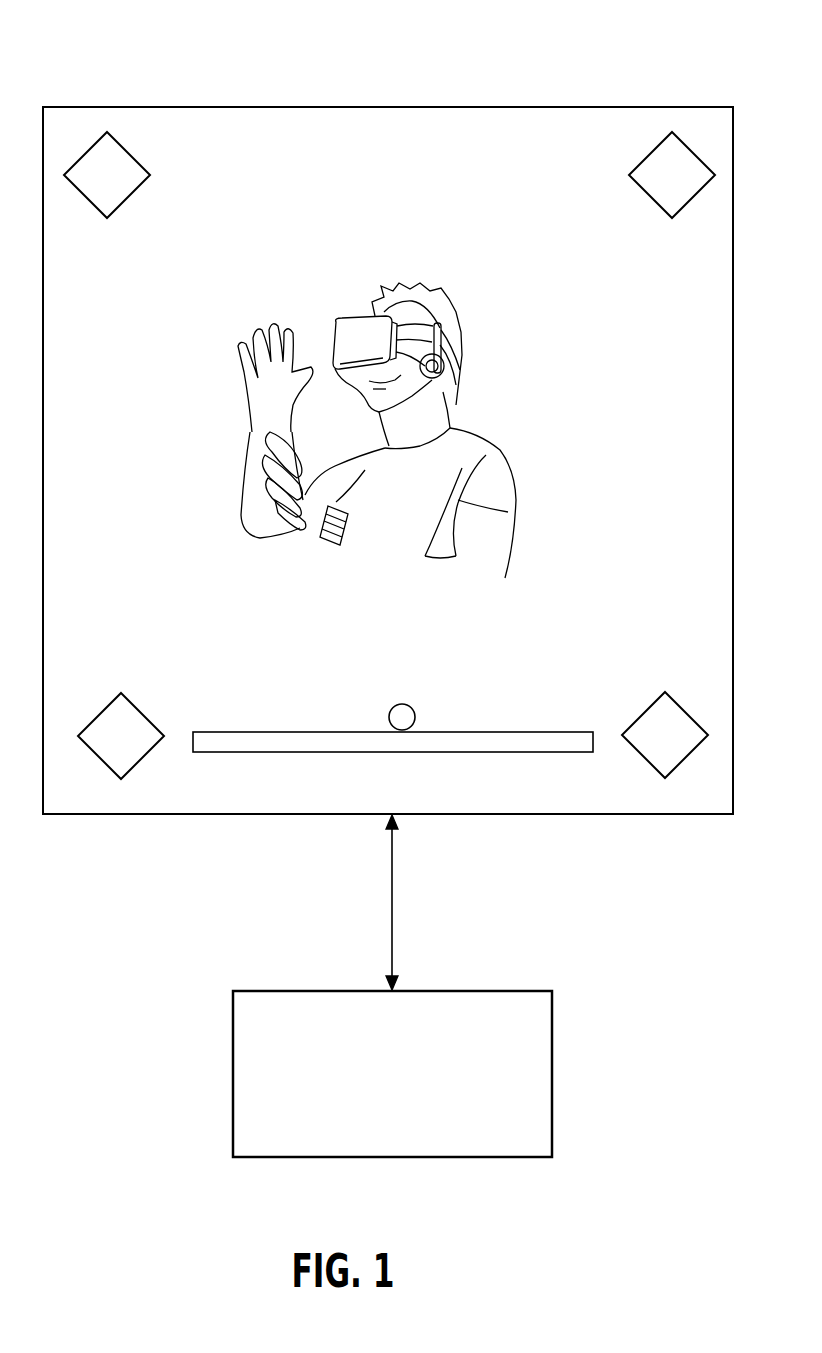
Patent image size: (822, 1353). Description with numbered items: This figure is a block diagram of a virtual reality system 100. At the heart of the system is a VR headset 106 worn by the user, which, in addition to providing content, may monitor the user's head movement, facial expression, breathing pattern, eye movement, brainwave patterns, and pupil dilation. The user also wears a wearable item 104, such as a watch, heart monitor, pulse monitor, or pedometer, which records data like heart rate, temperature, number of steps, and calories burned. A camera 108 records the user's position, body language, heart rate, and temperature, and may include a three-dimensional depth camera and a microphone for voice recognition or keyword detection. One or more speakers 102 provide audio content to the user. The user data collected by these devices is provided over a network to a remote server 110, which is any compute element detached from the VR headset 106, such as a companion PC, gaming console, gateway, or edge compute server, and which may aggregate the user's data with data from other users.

The virtual reality system 100 is at (764, 37).
The speakers 102 is at (389, 455).
The wearable item 104 is at (322, 550).
The VR headset 106 is at (358, 316).
The camera 108 is at (502, 753).
The remote server 110 is at (392, 1074).